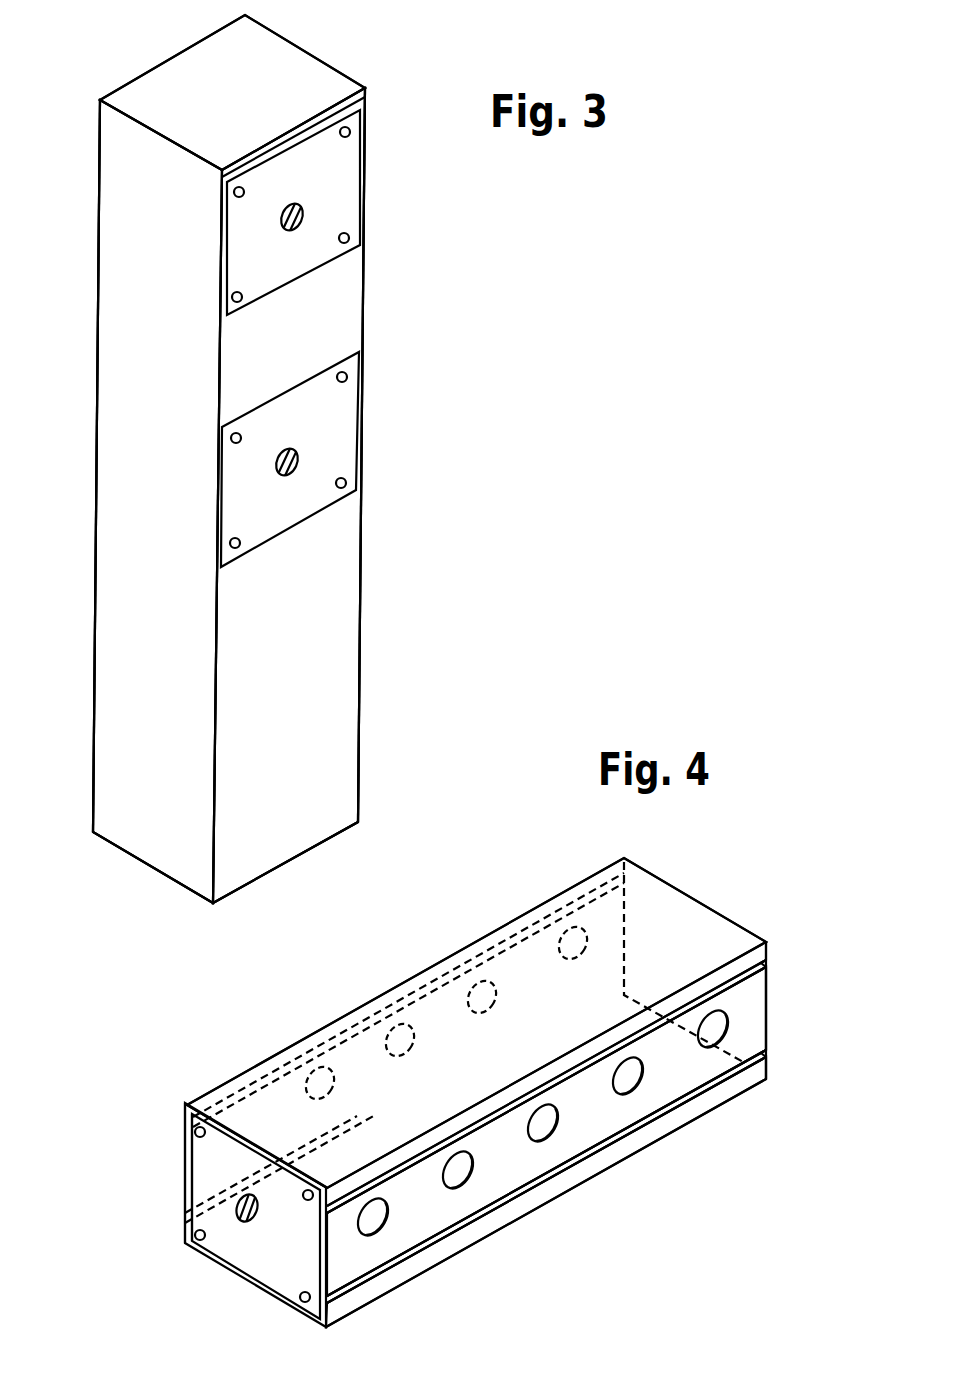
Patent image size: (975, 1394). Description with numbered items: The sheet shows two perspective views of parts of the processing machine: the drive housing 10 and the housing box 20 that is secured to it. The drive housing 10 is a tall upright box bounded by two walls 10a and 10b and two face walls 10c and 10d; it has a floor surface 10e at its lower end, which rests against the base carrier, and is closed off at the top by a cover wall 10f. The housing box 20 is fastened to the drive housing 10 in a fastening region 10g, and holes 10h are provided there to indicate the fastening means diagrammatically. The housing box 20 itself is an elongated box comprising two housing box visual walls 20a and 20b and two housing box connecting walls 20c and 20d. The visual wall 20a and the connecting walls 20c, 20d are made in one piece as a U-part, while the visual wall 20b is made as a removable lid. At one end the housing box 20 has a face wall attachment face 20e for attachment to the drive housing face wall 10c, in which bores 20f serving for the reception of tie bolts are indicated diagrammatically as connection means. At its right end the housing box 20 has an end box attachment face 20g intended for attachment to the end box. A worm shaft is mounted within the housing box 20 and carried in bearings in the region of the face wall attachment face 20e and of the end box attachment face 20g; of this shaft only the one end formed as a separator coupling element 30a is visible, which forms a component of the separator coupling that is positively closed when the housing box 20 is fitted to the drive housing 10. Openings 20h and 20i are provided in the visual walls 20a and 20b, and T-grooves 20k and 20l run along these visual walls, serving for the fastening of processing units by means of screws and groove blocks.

In FIG. 3, the drive housing 10 is at (361, 745).
In FIG. 3, the drive housing wall 10a is at (133, 520).
In FIG. 3, the drive housing wall 10b is at (361, 549).
In FIG. 3, the drive housing face wall 10c is at (324, 637).
In FIG. 3, the drive housing face wall 10d is at (97, 297).
In FIG. 3, the floor surface 10e is at (160, 874).
In FIG. 3, the cover wall 10f is at (289, 82).
In FIG. 3, the fastening region 10g is at (338, 194).
In FIG. 3, the holes 10h is at (238, 193).
In FIG. 4, the housing box 20 is at (683, 889).
In FIG. 4, the housing box visual wall 20a is at (613, 1115).
In FIG. 4, the housing box visual wall 20b is at (184, 1193).
In FIG. 4, the housing box connecting wall 20c is at (495, 1242).
In FIG. 4, the housing box connecting wall 20d is at (437, 1018).
In FIG. 4, the face wall attachment face 20e is at (204, 1171).
In FIG. 4, the bores 20f is at (197, 1131).
In FIG. 4, the end box attachment face 20g is at (770, 1000).
In FIG. 4, the openings 20h is at (554, 1144).
In FIG. 4, the openings 20i is at (558, 943).
In FIG. 4, the T-grooves 20k is at (676, 1010).
In FIG. 4, the T-grooves 20l is at (491, 943).
In FIG. 4, the separator coupling element 30a is at (241, 1214).